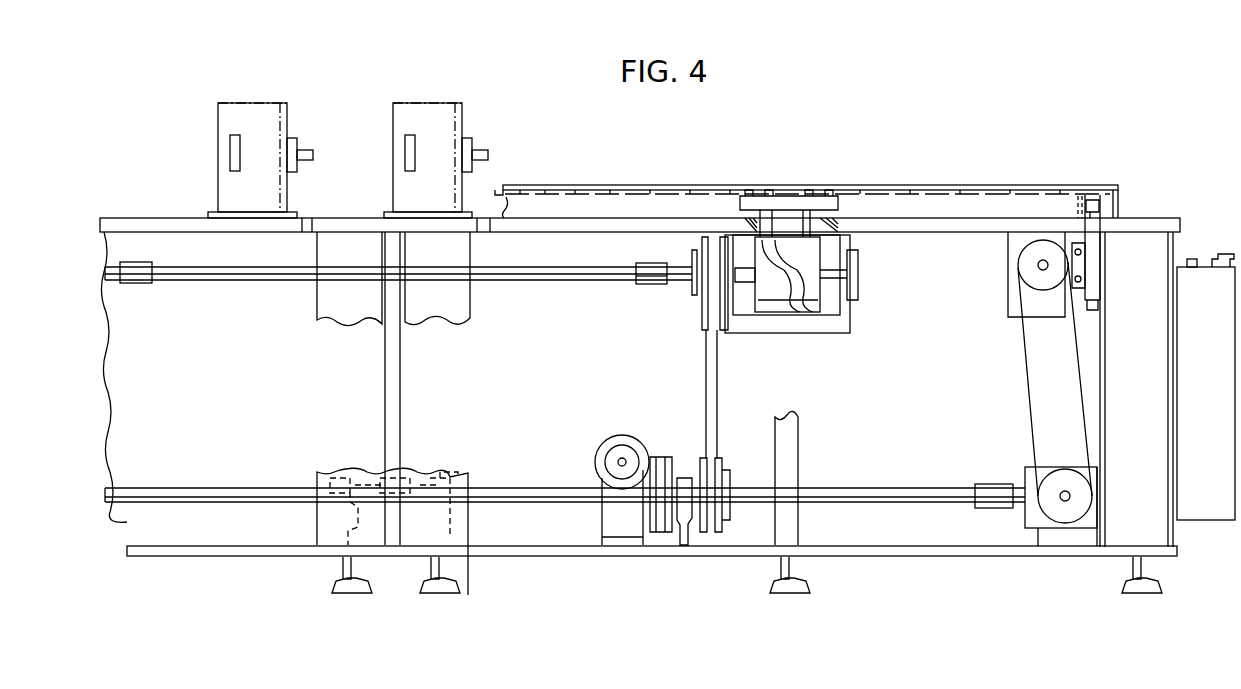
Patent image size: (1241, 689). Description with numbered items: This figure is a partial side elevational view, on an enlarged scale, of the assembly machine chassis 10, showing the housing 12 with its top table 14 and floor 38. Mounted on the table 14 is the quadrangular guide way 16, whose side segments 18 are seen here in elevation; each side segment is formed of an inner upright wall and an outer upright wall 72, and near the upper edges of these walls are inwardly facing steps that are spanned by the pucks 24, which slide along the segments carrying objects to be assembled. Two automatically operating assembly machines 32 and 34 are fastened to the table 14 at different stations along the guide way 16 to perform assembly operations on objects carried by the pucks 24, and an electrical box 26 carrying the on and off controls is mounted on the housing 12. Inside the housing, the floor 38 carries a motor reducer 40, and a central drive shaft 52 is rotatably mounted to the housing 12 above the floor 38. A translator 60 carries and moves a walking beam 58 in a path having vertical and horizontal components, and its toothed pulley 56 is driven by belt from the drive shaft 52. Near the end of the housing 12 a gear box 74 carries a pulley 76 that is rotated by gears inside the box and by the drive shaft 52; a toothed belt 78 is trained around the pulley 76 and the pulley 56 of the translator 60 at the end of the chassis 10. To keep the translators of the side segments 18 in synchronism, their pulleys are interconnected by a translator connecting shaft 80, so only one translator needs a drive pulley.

The assembly machine chassis 10 is at (1033, 172).
The housing 12 is at (950, 546).
The top table 14 is at (1135, 220).
The guide way 16 is at (806, 176).
The side segments 18 is at (870, 184).
The puck 24 is at (560, 193).
The electrical box 26 is at (1215, 324).
The assembly machine 32 is at (397, 109).
The assembly machine 34 is at (278, 114).
The floor 38 is at (566, 556).
The motor reducer 40 is at (605, 512).
The central drive shaft 52 is at (557, 490).
The toothed pulley 56 is at (1030, 272).
The walking beam 58 is at (770, 208).
The translator 60 is at (858, 304).
The outer upright wall 72 is at (680, 206).
The gear box 74 is at (1035, 490).
The pulley 76 is at (1100, 478).
The toothed belt 78 is at (899, 379).
The translator connecting shaft 80 is at (618, 280).